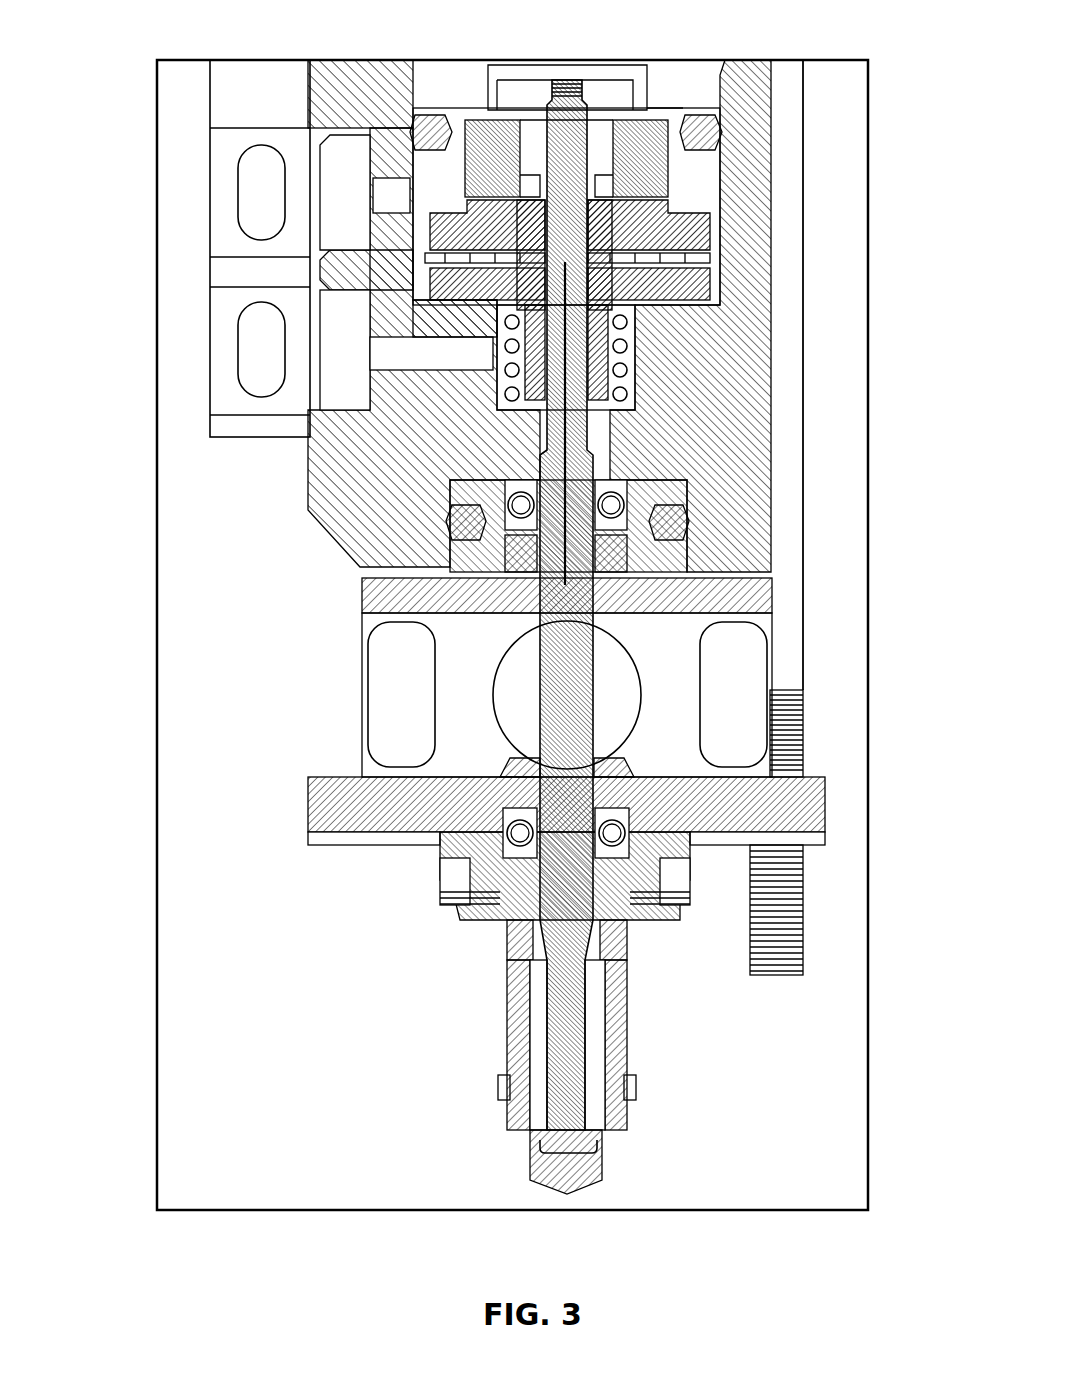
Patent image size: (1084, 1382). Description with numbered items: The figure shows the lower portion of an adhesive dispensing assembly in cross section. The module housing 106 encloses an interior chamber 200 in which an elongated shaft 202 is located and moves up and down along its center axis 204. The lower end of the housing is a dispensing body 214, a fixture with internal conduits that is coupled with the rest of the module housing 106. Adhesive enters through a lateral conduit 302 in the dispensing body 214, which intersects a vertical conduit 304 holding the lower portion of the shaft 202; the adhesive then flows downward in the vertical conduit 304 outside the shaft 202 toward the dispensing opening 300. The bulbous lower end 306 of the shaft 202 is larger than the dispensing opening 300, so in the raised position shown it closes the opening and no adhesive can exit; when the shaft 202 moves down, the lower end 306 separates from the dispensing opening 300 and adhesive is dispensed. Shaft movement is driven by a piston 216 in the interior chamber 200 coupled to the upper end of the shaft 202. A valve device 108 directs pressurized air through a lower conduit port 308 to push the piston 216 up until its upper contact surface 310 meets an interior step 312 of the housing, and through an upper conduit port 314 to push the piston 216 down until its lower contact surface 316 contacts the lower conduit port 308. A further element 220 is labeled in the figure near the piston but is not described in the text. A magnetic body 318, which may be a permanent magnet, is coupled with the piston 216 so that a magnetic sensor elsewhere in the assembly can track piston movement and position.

The module housing 106 is at (307, 510).
The valve device 108 is at (210, 427).
The interior chamber 200 is at (690, 316).
The elongated shaft 202 is at (580, 607).
The center axis 204 is at (567, 423).
The dispensing body 214 is at (452, 1038).
The piston 216 is at (660, 295).
The spring 220 is at (483, 325).
The dispensing opening 300 is at (570, 1152).
The lateral conduit 302 is at (518, 930).
The vertical conduit 304 is at (543, 1004).
The lower end 306 is at (593, 1173).
The lower conduit port 308 is at (433, 345).
The upper contact surface 310 is at (456, 200).
The interior step 312 is at (433, 218).
The upper conduit port 314 is at (400, 192).
The lower contact surface 316 is at (456, 312).
The magnetic body 318 is at (640, 187).